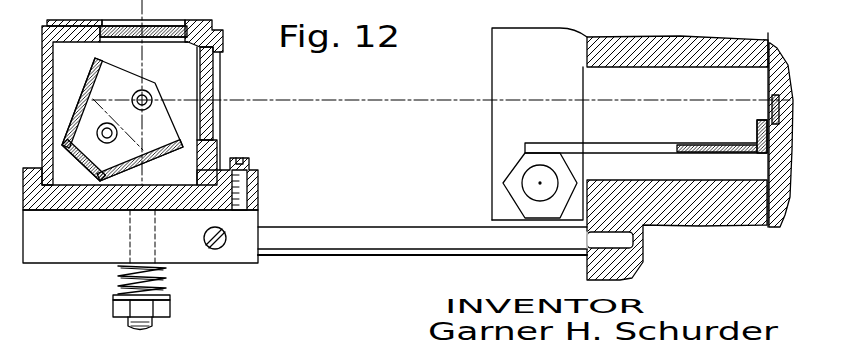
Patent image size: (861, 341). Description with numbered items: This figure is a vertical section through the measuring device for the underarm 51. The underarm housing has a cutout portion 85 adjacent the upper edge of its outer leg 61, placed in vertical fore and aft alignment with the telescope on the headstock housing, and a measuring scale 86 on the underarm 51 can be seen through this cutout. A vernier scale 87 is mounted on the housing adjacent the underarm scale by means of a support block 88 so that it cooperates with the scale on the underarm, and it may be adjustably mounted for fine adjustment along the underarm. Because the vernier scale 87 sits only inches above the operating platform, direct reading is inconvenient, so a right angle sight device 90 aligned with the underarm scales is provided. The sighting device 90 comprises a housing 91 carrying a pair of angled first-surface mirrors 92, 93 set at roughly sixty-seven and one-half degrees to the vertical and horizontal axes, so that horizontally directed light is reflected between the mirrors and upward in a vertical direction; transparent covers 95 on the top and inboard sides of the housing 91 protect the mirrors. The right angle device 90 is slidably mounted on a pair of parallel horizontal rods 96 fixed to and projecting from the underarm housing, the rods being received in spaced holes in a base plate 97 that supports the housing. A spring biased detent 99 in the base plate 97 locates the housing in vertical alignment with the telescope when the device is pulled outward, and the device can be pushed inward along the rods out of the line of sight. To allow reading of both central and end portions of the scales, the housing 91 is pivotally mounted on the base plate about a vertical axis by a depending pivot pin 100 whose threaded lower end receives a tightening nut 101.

The underarm 51 is at (775, 229).
The outer leg 61 is at (677, 60).
The cutout portion 85 is at (650, 180).
The measuring scale 86 is at (766, 99).
The vernier scale 87 is at (758, 121).
The support block 88 is at (565, 127).
The right angle sight device 90 is at (240, 72).
The housing 91 is at (224, 39).
The angled mirror 92 is at (102, 88).
The angled mirror 93 is at (150, 157).
The transparent covers 95 is at (162, 30).
The parallel horizontal rods 96 is at (387, 229).
The base plate 97 is at (250, 230).
The spring biased detent 99 is at (227, 257).
The pivot pin 100 is at (147, 328).
The tightening nut 101 is at (166, 310).